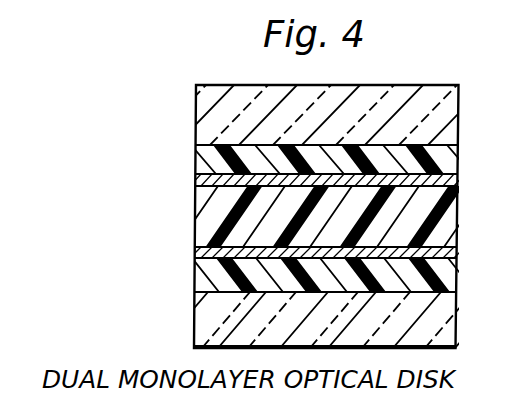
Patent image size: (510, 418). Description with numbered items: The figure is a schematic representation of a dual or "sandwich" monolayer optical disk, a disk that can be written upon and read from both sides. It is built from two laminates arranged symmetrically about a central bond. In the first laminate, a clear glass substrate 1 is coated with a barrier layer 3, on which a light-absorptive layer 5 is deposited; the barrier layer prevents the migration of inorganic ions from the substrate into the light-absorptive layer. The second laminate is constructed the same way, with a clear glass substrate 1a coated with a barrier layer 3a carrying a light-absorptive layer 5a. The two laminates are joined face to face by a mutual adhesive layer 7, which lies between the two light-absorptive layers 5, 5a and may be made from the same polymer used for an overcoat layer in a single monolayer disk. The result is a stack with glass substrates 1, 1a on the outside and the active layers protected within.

The clear glass substrate 1 is at (207, 124).
The barrier layer 3 is at (205, 160).
The light-absorptive layer 5 is at (205, 181).
The adhesive layer 7 is at (205, 221).
The light-absorptive layer 5a is at (196, 262).
The barrier layer 3a is at (201, 275).
The clear glass substrate 1a is at (205, 333).